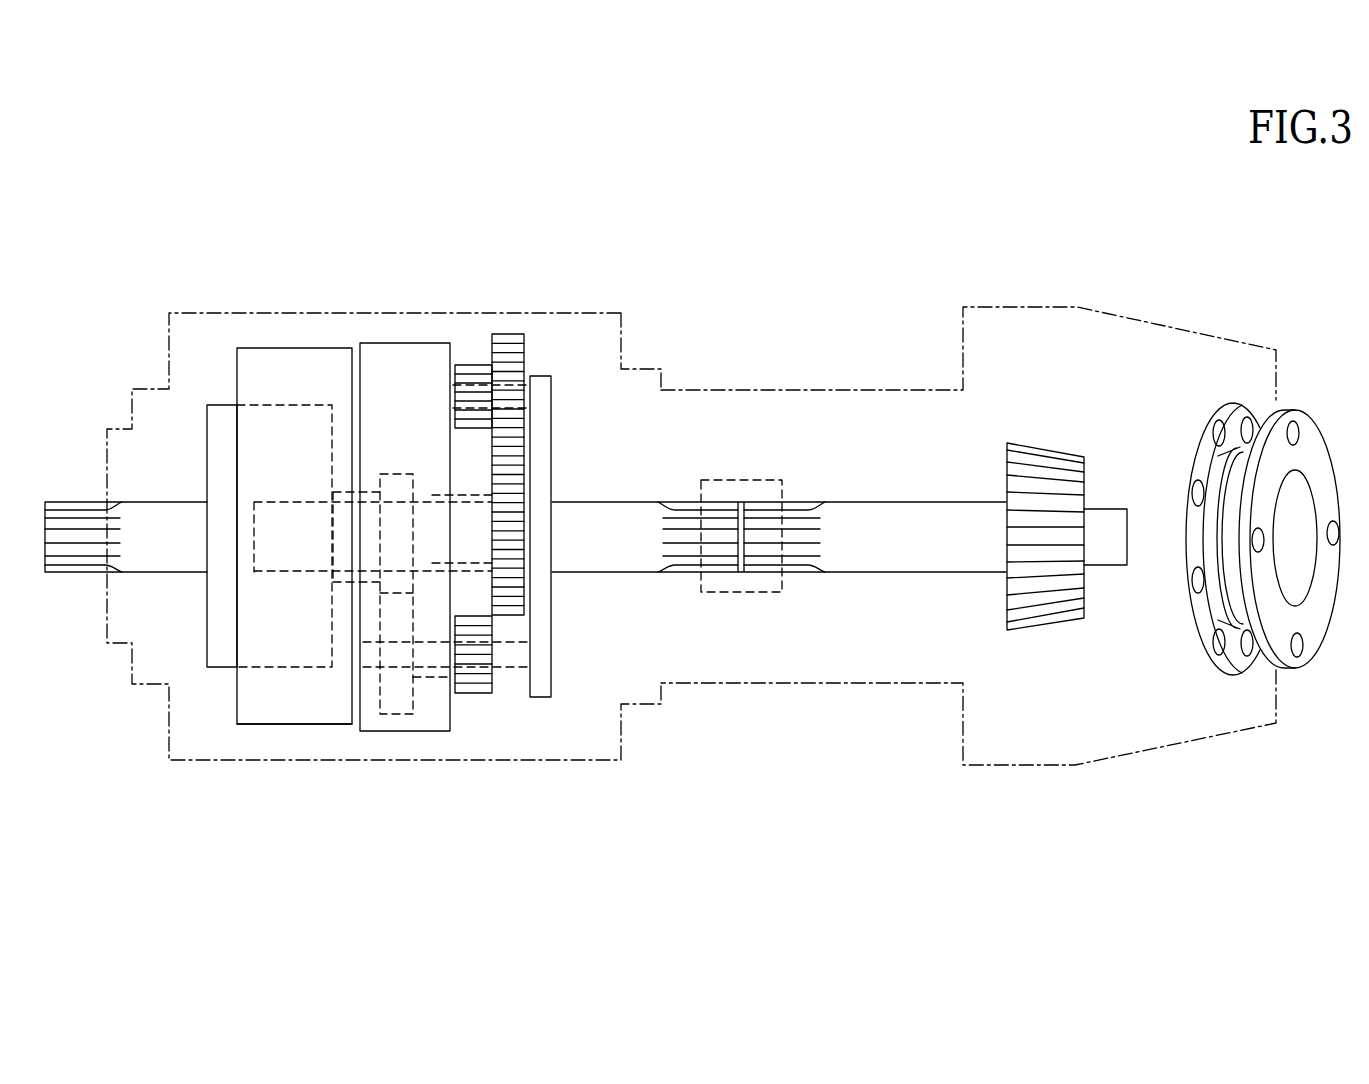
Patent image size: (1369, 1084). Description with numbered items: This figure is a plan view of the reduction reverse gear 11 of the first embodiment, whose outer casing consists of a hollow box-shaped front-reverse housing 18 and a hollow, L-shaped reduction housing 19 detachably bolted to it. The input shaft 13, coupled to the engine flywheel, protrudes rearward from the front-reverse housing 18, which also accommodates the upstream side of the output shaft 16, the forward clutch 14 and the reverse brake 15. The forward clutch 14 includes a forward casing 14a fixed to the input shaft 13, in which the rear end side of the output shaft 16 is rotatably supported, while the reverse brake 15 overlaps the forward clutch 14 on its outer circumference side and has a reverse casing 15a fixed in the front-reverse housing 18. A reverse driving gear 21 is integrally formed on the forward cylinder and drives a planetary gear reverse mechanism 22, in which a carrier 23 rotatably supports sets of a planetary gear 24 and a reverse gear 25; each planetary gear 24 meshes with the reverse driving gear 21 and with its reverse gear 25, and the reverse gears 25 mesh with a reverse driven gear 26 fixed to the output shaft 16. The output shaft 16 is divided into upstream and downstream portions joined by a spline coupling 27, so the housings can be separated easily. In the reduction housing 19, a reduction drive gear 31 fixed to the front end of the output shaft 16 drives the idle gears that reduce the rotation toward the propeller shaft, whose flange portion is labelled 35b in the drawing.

The reduction reverse gear 11 is at (748, 205).
The input shaft 13 is at (82, 562).
The forward clutch 14 is at (198, 653).
The forward casing 14a is at (277, 413).
The reverse brake 15 is at (305, 348).
The reverse casing 15a is at (315, 712).
The output shaft 16 is at (636, 527).
The front-reverse housing 18 is at (260, 760).
The reduction housing 19 is at (1163, 323).
The reverse driving gear 21 is at (403, 474).
The planetary gear reverse mechanism 22 is at (537, 342).
The carrier 23 is at (429, 717).
The planetary gear 24 is at (403, 714).
The reverse gear 25 is at (510, 333).
The reverse driven gear 26 is at (505, 603).
The coupling 27 is at (743, 592).
The reduction drive gear 31 is at (1045, 503).
The flange 35b is at (1285, 653).